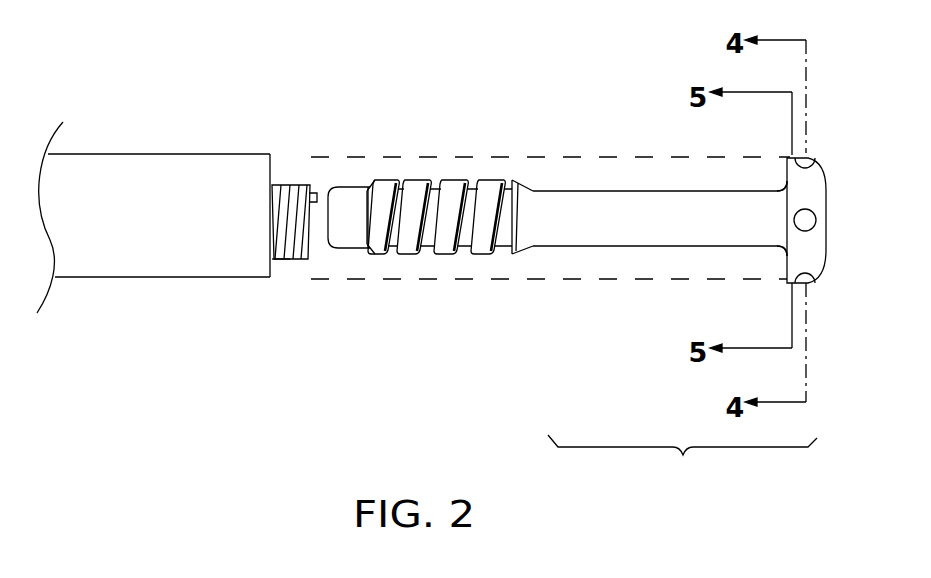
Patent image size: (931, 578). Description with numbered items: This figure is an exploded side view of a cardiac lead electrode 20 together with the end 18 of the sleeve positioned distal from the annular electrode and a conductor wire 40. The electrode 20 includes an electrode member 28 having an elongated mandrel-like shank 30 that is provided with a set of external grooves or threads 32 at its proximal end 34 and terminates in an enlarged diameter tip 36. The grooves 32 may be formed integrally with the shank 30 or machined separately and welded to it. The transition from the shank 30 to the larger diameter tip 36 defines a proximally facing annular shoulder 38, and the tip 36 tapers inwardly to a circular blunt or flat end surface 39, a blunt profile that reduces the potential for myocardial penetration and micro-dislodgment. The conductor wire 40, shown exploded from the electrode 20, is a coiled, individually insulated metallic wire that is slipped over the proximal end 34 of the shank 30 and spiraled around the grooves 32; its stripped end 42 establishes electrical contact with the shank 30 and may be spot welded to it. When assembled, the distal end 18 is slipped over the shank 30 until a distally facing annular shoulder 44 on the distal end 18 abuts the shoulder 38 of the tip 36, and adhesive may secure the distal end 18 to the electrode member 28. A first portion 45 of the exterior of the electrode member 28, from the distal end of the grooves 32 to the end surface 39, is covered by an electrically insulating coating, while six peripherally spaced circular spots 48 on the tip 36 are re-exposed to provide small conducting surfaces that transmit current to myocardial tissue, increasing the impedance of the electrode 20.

The distal end of the sleeve 18 is at (157, 152).
The electrode 20 is at (612, 170).
The electrode member 28 is at (566, 190).
The shank 30 is at (563, 247).
The grooves or threads 32 is at (418, 257).
The proximal end of the shank 34 is at (343, 240).
The tip 36 is at (822, 272).
The proximally facing annular shoulder 38 is at (785, 266).
The end surface 39 is at (827, 219).
The conductor wire 40 is at (295, 177).
The end of the wire 42 is at (318, 192).
The distally facing annular shoulder 44 is at (275, 265).
The first portion 45 is at (684, 458).
The circular spots 48 is at (812, 216).